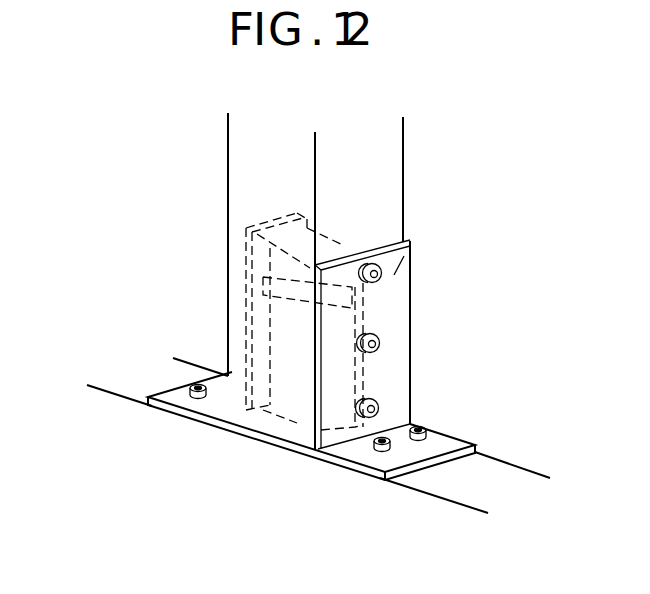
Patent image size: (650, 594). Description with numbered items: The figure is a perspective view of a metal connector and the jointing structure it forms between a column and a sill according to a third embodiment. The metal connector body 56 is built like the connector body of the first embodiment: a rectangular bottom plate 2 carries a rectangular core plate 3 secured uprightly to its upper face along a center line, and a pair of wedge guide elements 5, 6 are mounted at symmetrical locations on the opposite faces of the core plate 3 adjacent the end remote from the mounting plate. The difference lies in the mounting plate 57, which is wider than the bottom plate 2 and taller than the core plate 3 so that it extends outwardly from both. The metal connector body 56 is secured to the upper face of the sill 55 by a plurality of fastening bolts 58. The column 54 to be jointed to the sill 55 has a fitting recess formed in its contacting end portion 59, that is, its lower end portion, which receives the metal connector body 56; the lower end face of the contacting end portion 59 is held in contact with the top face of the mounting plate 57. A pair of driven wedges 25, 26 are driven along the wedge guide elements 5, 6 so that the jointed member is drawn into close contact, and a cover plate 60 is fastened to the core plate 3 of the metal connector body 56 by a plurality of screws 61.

The bottom plate 2 is at (245, 279).
The core plate 3 is at (293, 378).
The wedge guide element 5 is at (412, 242).
The wedge guide element 6 is at (245, 243).
The driven wedge 25 is at (365, 311).
The driven wedge 26 is at (327, 306).
The column 54 is at (243, 153).
The sill 55 is at (493, 478).
The metal connector body 56 is at (340, 228).
The mounting plate 57 is at (322, 458).
The fastening bolt 58 is at (187, 394).
The contacting end portion 59 is at (228, 316).
The cover plate 60 is at (408, 268).
The screw 61 is at (382, 343).